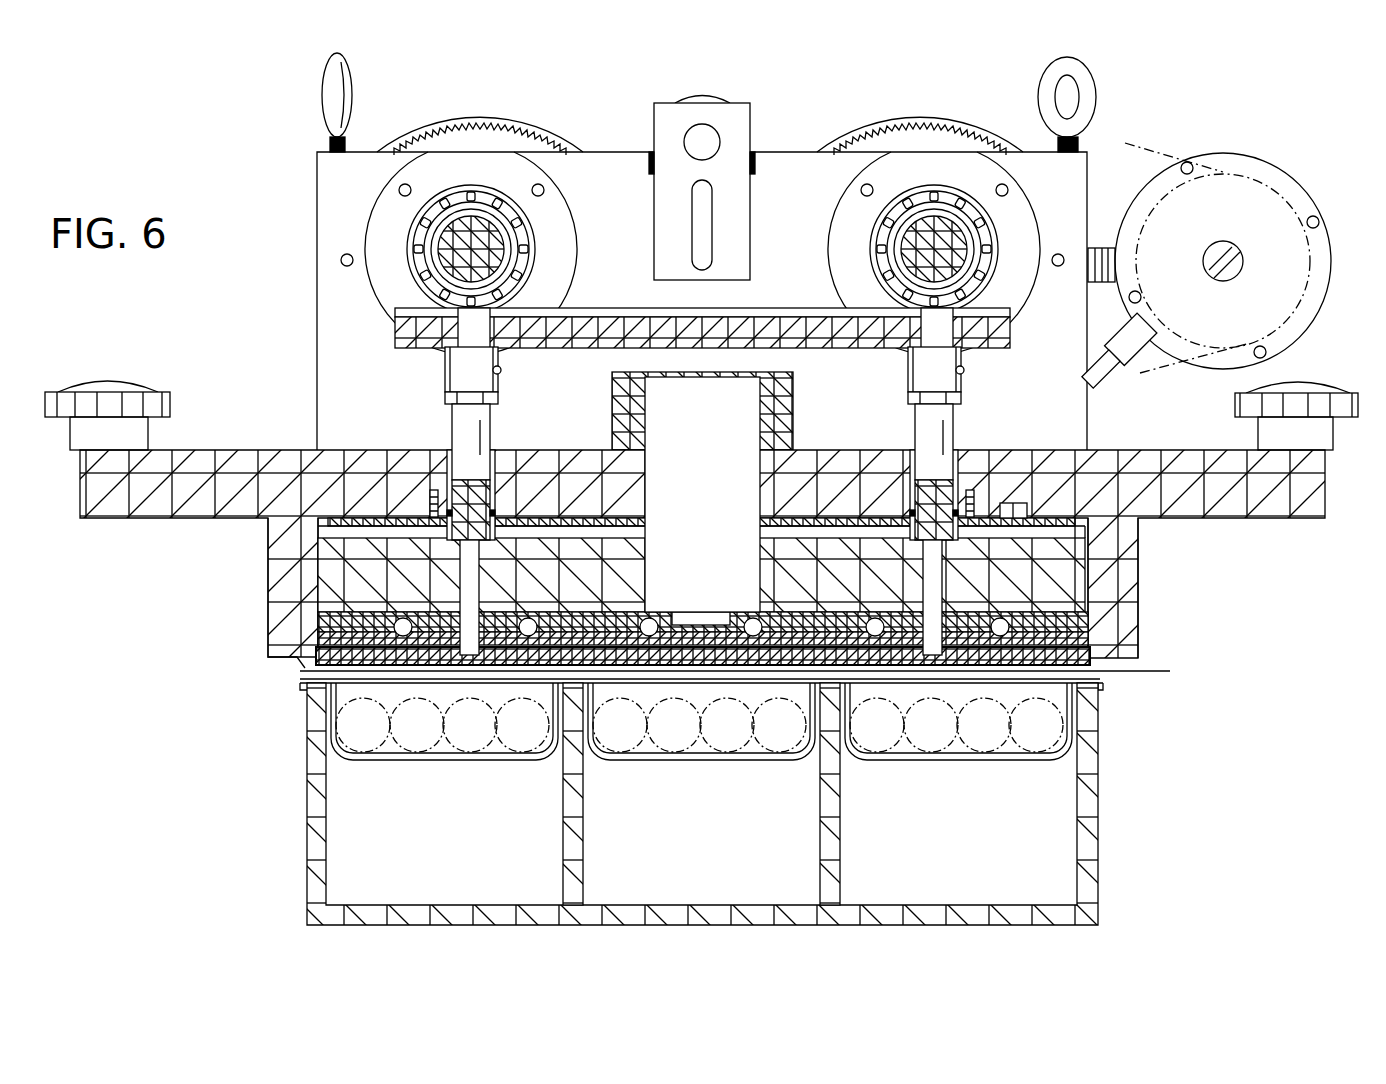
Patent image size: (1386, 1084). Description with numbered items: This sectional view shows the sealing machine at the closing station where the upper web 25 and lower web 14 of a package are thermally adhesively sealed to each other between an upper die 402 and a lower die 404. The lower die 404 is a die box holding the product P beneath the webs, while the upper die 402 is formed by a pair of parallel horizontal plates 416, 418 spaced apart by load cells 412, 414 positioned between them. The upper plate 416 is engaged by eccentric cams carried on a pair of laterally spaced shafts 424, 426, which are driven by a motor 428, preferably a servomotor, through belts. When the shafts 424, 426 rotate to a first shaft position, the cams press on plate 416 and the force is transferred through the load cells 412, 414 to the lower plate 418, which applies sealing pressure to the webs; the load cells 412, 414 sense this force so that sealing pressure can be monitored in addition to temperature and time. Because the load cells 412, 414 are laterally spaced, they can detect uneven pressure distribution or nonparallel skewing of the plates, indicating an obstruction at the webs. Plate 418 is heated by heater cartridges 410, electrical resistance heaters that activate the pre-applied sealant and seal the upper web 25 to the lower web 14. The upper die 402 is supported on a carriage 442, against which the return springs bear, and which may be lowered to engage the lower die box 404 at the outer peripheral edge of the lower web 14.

The lower web 14 is at (1105, 688).
The upper web 25 is at (752, 672).
The upper die 402 is at (316, 598).
The lower die 404 is at (310, 790).
The heater cartridges 410 is at (999, 636).
The load cell 412 is at (462, 432).
The load cell 414 is at (930, 438).
The plate 416 is at (1010, 338).
The plate 418 is at (1072, 575).
The shaft 424 is at (478, 252).
The shaft 426 is at (925, 252).
The motor 428 is at (1200, 152).
The carriage 442 is at (1326, 500).
The product P is at (1043, 722).